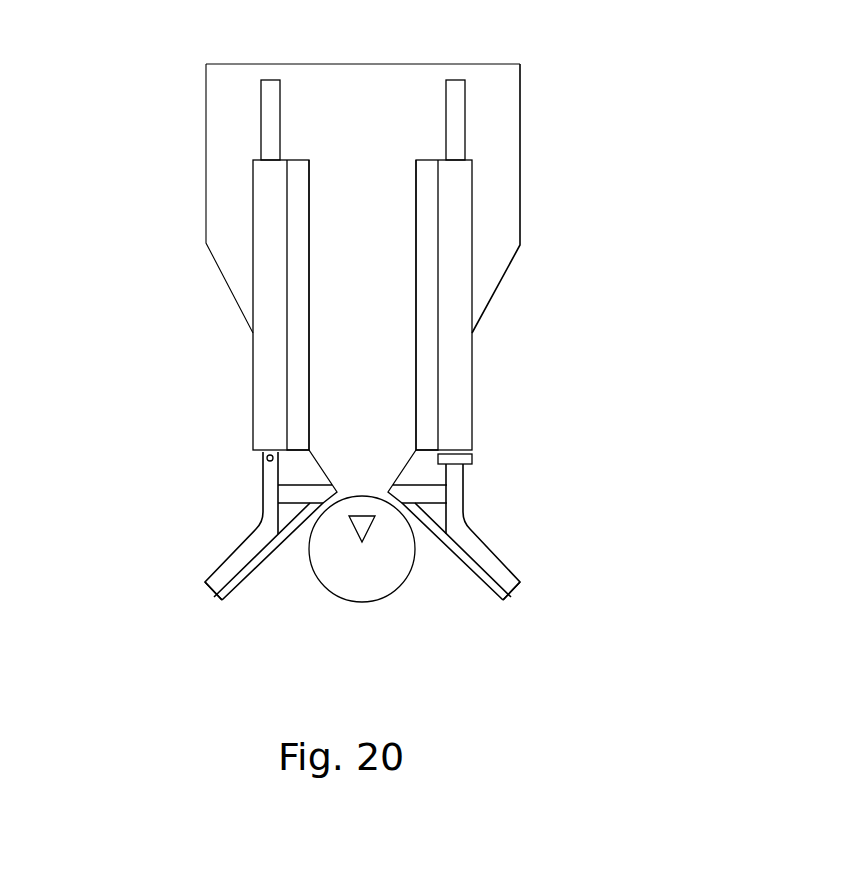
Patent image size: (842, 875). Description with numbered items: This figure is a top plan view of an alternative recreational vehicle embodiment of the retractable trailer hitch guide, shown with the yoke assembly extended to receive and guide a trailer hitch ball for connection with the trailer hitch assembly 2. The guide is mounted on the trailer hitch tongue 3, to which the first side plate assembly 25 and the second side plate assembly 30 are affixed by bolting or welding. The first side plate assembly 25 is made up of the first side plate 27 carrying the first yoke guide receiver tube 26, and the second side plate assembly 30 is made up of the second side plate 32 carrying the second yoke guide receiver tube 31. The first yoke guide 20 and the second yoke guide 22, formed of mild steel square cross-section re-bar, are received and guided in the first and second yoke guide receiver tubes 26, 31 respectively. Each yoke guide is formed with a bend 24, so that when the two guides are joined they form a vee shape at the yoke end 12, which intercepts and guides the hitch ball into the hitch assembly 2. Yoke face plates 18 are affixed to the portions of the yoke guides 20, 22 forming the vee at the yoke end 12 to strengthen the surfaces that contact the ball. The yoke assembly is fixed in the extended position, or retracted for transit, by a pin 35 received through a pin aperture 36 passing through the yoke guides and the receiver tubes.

The trailer hitch assembly 2 is at (290, 620).
The trailer hitch tongue 3 is at (352, 193).
The yoke end 12 is at (424, 595).
The yoke face plates 18 is at (247, 573).
The first yoke guide 20 is at (265, 470).
The second yoke guide 22 is at (455, 485).
The bend 24 is at (255, 522).
The first side plate assembly 25 is at (198, 334).
The first yoke guide receiver tube 26 is at (213, 265).
The first side plate 27 is at (296, 210).
The second side plate assembly 30 is at (518, 250).
The second yoke guide receiver tube 31 is at (513, 265).
The second side plate 32 is at (425, 192).
The pin 35 is at (466, 456).
The pin aperture 36 is at (266, 456).